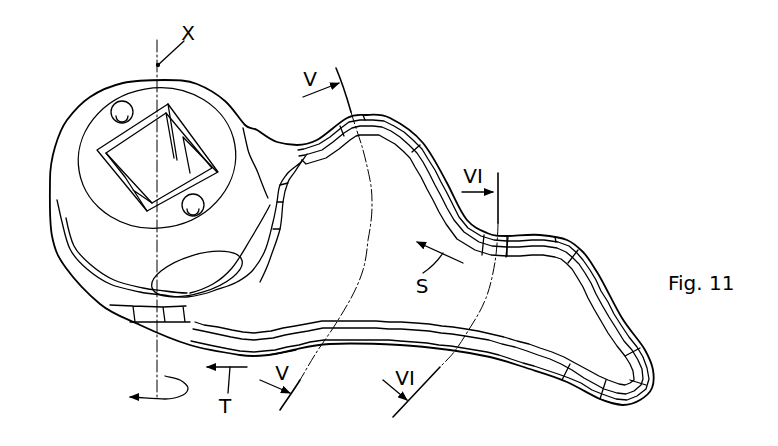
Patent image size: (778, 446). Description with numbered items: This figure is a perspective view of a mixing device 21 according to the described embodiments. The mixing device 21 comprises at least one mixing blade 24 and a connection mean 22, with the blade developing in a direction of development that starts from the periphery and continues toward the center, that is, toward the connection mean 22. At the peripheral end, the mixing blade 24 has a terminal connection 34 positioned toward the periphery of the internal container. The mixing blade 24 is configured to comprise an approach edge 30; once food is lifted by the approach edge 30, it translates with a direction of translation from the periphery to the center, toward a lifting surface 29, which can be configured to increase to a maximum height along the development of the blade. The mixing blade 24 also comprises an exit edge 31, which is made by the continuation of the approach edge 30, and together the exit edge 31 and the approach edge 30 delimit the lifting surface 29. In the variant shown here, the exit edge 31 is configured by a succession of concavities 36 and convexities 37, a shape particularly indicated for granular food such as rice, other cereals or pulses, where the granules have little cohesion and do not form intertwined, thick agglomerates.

The mixing device 21 is at (423, 77).
The connection mean 22 is at (93, 105).
The mixing blade 24 is at (585, 240).
The lifting surface 29 is at (413, 187).
The approach edge 30 is at (355, 345).
The exit edge 31 is at (390, 118).
The terminal connection 34 is at (640, 405).
The concavities 36 is at (507, 233).
The convexities 37 is at (363, 115).